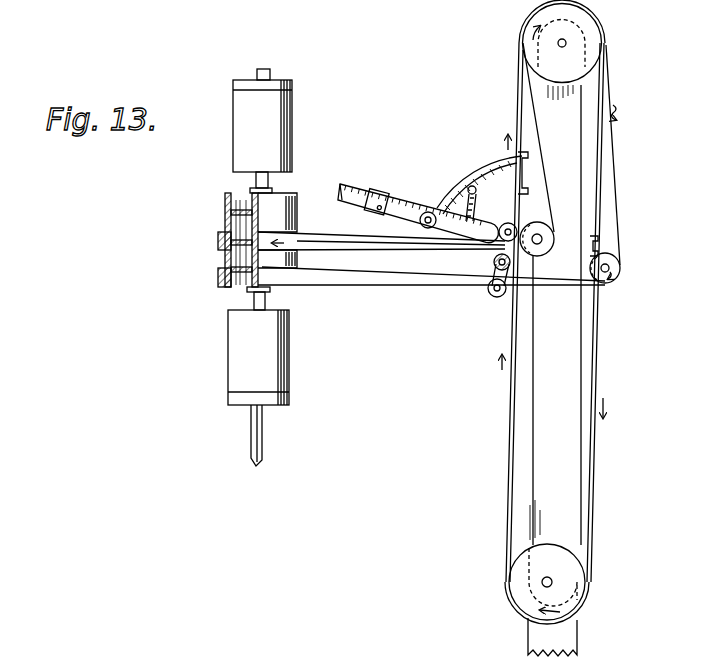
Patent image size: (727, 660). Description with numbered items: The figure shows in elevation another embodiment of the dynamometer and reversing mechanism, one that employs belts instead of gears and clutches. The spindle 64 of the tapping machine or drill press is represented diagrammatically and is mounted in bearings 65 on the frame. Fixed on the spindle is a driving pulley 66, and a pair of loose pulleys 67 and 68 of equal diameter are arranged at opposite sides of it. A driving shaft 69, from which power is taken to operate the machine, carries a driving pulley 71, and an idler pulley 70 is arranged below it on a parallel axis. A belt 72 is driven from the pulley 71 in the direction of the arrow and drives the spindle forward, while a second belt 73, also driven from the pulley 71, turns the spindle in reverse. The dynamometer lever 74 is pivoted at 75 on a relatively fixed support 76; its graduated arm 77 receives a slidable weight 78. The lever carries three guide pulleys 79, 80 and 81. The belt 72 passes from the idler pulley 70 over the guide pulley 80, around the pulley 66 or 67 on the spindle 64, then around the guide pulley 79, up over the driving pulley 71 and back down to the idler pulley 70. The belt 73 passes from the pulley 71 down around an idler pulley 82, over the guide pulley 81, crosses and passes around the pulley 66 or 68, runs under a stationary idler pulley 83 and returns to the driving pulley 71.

The spindle 64 is at (267, 300).
The bearings 65 is at (282, 130).
The driving pulley 66 is at (220, 240).
The loose pulley 67 is at (226, 214).
The loose pulley 68 is at (225, 262).
The driving shaft 69 is at (552, 580).
The idler pulley 70 is at (522, 575).
The driving pulley 71 is at (590, 38).
The belt 72 is at (517, 121).
The second belt 73 is at (614, 176).
The dynamometer lever 74 is at (412, 186).
The pivot 75 is at (431, 212).
The fixed support 76 is at (471, 184).
The graduated arm 77 is at (351, 190).
The adjustable weight 78 is at (380, 182).
The guide pulley 79 is at (503, 217).
The guide pulley 80 is at (496, 256).
The guide pulley 81 is at (491, 294).
The idler pulley 82 is at (621, 268).
The stationary idler pulley 83 is at (552, 237).